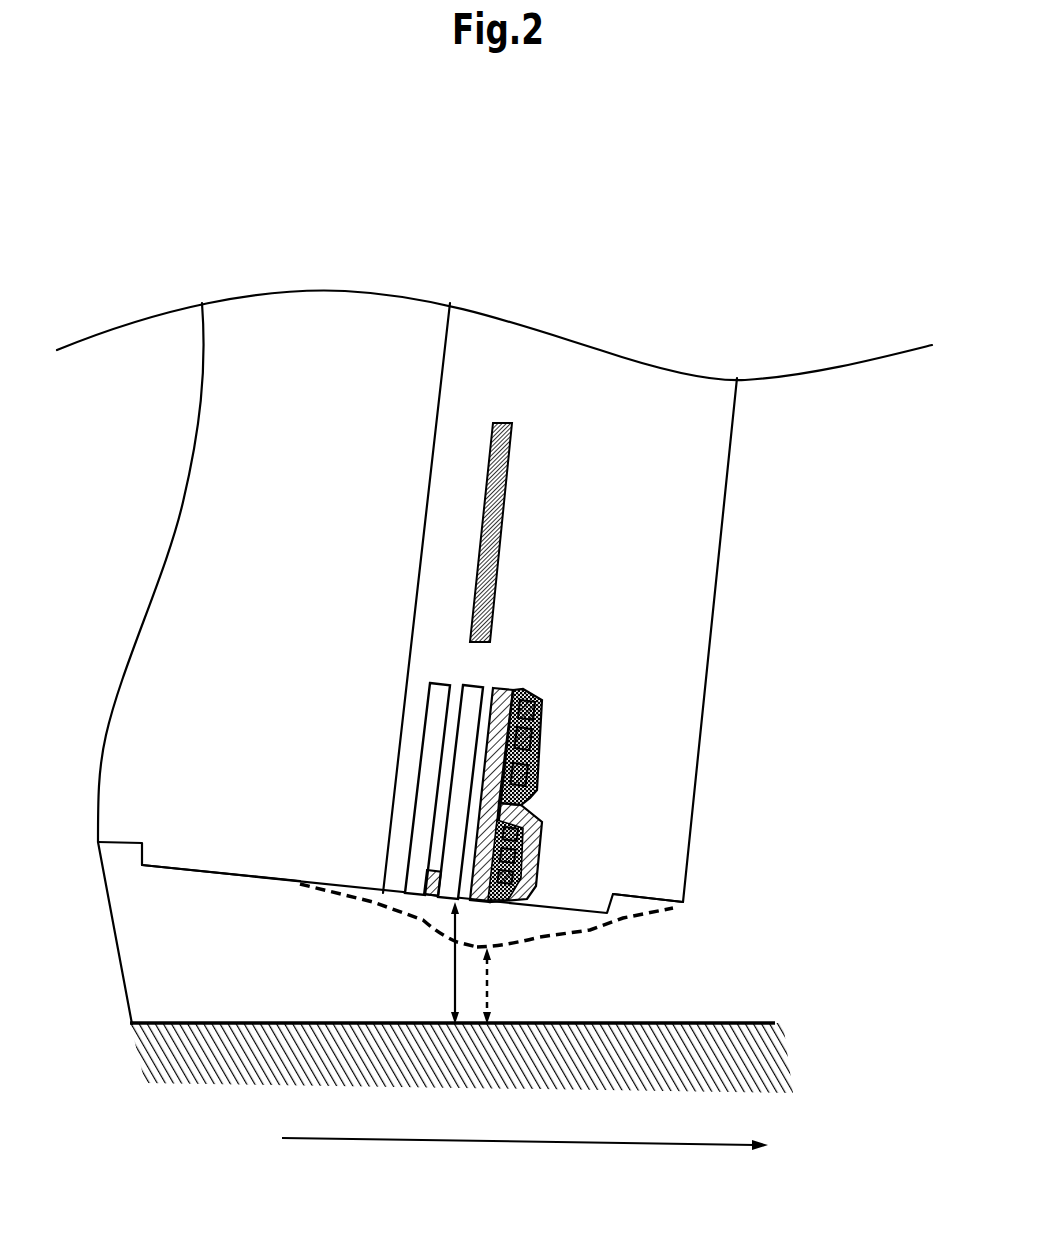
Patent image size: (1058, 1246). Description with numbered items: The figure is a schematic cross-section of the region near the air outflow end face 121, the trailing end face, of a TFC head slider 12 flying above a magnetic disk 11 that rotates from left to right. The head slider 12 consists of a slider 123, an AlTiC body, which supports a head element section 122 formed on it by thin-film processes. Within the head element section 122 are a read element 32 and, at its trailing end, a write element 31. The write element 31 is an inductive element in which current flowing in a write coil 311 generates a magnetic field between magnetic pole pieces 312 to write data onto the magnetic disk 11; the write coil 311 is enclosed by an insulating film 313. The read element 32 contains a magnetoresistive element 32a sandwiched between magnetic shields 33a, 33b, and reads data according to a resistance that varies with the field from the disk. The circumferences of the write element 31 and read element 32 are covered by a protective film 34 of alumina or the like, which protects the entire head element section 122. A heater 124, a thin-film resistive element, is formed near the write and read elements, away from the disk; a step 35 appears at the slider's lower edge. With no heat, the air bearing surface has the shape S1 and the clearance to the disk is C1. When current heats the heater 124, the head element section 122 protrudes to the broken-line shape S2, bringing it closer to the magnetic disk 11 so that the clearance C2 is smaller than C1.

The magnetic disk 11 is at (705, 1022).
The head slider 12 is at (612, 278).
The air outflow end face 121 is at (727, 490).
The head element section 122 is at (772, 648).
The slider 123 is at (113, 843).
The heater 124 is at (502, 547).
The write element 31 is at (657, 795).
The write coil 311 is at (543, 705).
The magnetic pole pieces 312 is at (540, 858).
The insulating film 313 is at (540, 760).
The read element 32 is at (412, 904).
The magnetoresistive element 32a is at (430, 903).
The magnetic shield 33a is at (475, 685).
The magnetic shield 33b is at (427, 702).
The protective film 34 is at (458, 407).
The bottom wall step 35 is at (187, 868).
The ABS shape S1 is at (368, 895).
The shape of the protrusion S2 is at (573, 942).
The clearance C1 is at (444, 963).
The clearance C2 is at (503, 986).